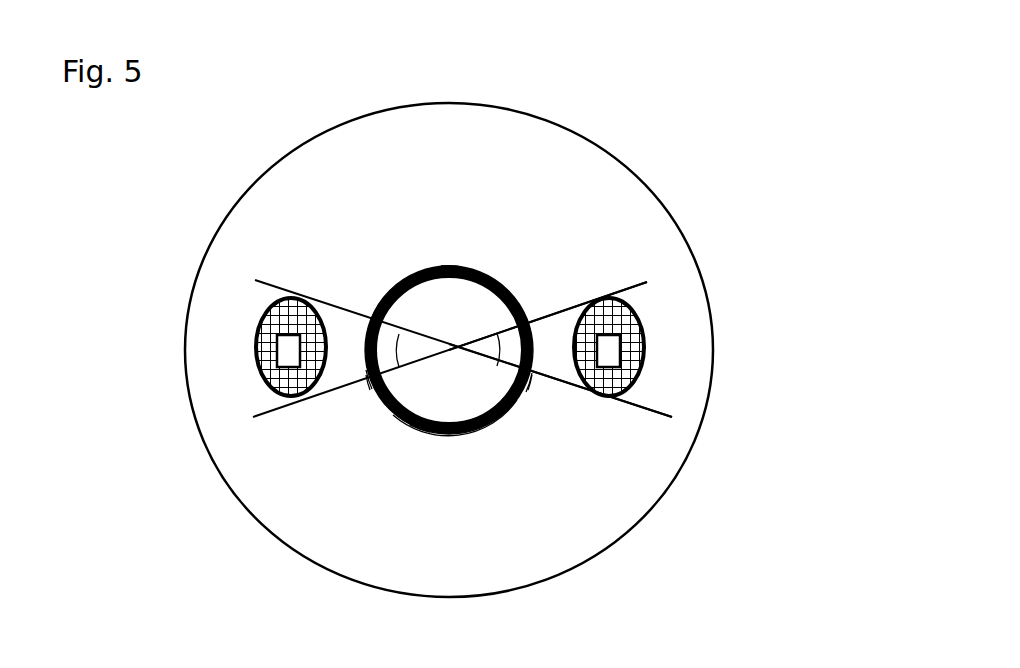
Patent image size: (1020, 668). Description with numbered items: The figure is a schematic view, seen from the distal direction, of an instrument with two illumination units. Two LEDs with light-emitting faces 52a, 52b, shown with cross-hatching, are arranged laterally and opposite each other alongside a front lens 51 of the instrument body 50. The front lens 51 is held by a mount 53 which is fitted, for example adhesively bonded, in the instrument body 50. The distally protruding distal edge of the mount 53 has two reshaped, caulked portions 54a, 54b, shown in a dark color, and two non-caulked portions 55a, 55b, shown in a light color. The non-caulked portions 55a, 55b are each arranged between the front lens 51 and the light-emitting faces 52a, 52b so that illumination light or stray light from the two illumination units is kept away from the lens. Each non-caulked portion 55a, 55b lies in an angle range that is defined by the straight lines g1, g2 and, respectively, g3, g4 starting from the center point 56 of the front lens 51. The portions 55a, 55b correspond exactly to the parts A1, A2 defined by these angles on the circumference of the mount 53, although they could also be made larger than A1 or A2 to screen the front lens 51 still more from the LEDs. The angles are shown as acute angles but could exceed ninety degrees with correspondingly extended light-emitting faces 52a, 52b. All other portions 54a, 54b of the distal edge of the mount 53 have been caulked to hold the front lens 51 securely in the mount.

The instrument body 50 is at (708, 167).
The front lens 51 is at (463, 298).
The light-emitting face 52a is at (257, 322).
The light-emitting face 52b is at (645, 345).
The mount 53 is at (512, 293).
The caulked portion 54a is at (453, 267).
The caulked portion 54b is at (420, 428).
The non-caulked portion 55a is at (525, 385).
The non-caulked portion 55b is at (368, 378).
The center point 56 is at (517, 400).
The straight line g1 is at (463, 341).
The straight line g2 is at (450, 360).
The straight line g3 is at (548, 302).
The straight line g4 is at (560, 387).
The part of the circumference of the mount A1 is at (368, 382).
The part of the circumference of the mount A2 is at (535, 387).